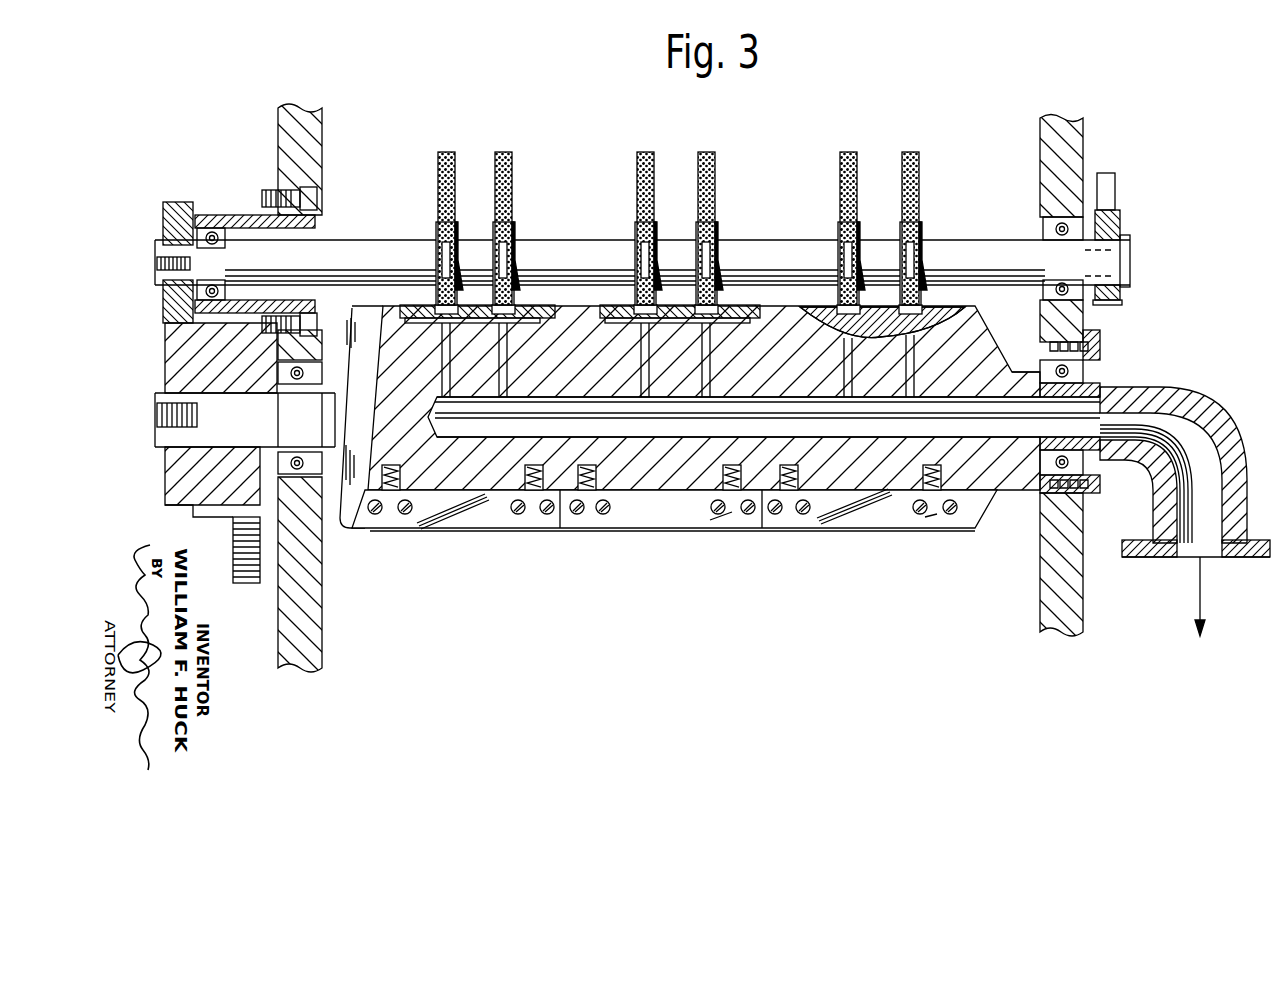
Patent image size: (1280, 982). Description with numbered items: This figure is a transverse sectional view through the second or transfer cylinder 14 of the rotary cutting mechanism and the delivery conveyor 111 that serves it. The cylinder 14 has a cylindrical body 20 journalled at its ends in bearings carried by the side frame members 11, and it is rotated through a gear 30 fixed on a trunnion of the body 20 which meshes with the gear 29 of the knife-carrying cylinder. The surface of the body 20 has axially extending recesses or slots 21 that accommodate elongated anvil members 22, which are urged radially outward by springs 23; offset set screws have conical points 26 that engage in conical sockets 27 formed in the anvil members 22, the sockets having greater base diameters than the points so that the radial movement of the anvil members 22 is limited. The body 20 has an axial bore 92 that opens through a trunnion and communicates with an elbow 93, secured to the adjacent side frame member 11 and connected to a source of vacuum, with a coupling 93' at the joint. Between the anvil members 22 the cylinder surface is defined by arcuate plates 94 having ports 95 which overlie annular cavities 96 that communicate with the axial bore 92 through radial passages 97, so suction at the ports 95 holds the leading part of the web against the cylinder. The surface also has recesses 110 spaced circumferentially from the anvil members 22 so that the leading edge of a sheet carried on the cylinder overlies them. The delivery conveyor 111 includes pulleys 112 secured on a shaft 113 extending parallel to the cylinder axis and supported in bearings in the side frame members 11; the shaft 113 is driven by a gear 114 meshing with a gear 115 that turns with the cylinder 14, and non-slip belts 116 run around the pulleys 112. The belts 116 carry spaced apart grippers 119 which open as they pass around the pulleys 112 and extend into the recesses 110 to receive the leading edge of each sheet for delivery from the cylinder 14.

The side frame member 11 is at (278, 140).
The second or transfer cylinder 14 is at (768, 543).
The cylindrical body 20 is at (771, 377).
The axially extending recess or slot 21 is at (688, 490).
The anvil member 22 is at (463, 528).
The spring 23 is at (401, 468).
The conical point 26 is at (407, 516).
The conical socket 27 is at (372, 514).
The gear 29 is at (248, 587).
The gear 30 is at (222, 516).
The axial bore 92 is at (1020, 420).
The elbow 93 is at (1185, 515).
The conduit coupling 93' is at (1115, 337).
The arcuate plate 94 is at (538, 325).
The perforation or port 95 is at (464, 322).
The annular cavity 96 is at (427, 325).
The radial passage 97 is at (450, 377).
The recess 110 is at (878, 308).
The delivery conveyor 111 is at (747, 184).
The pulley 112 is at (455, 231).
The shaft 113 is at (797, 218).
The gear 114 is at (172, 205).
The gear 115 is at (165, 348).
The non-slip belt 116 is at (440, 172).
The gripper 119 is at (905, 246).